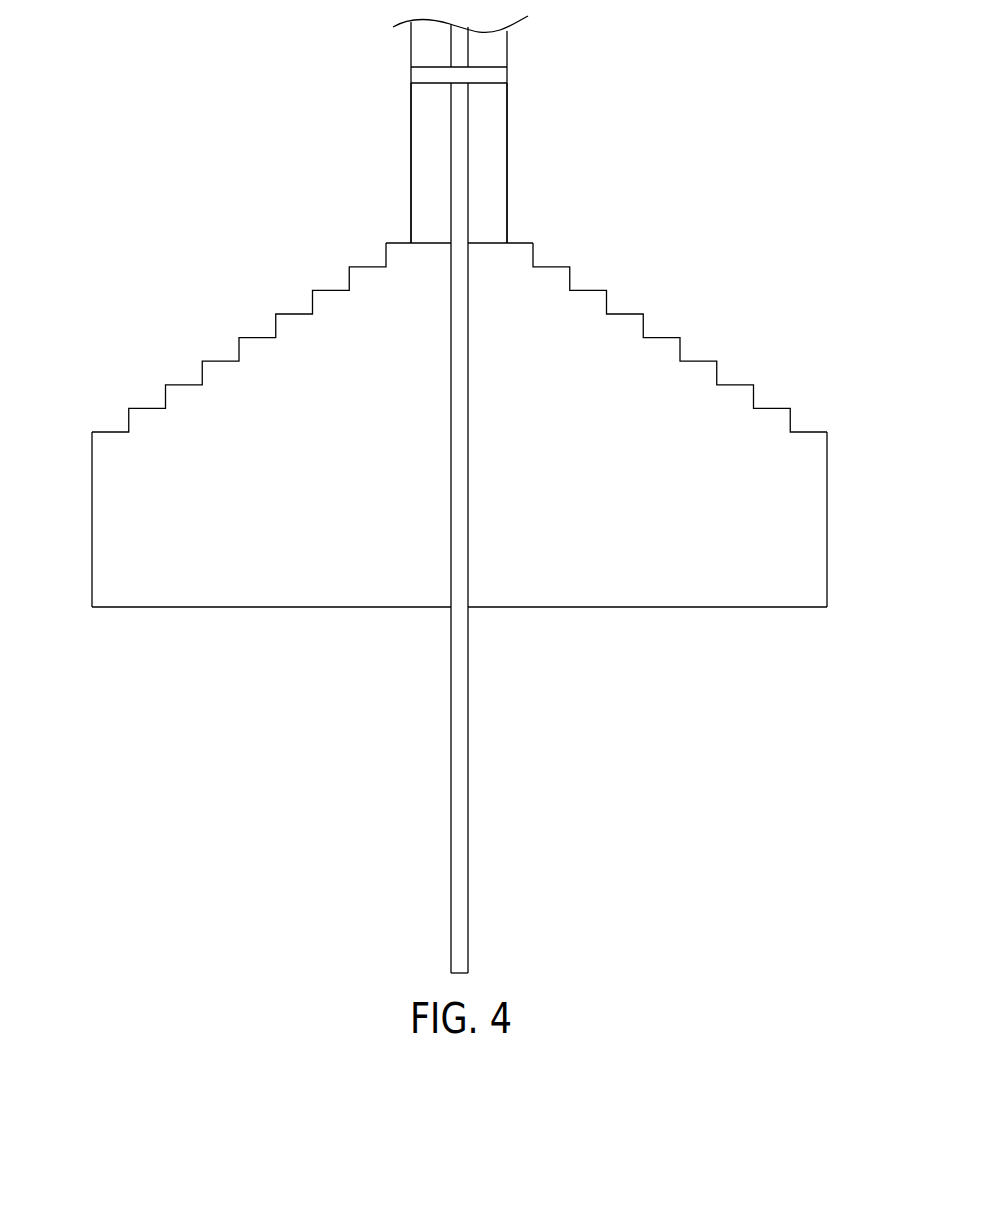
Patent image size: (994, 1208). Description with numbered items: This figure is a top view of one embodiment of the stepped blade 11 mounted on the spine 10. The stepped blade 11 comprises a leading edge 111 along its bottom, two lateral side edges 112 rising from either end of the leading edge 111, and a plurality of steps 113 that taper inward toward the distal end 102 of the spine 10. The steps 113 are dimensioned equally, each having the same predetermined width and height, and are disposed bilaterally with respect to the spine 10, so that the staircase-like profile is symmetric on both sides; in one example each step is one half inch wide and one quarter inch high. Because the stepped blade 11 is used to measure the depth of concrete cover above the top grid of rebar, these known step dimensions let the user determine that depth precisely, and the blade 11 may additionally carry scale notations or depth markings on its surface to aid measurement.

The spine 10 is at (419, 494).
The distal end of spine 102 is at (375, 213).
The stepped blade 11 is at (460, 455).
The leading edge 111 is at (240, 608).
The lateral side edges 112 is at (92, 490).
The steps 113 is at (207, 331).